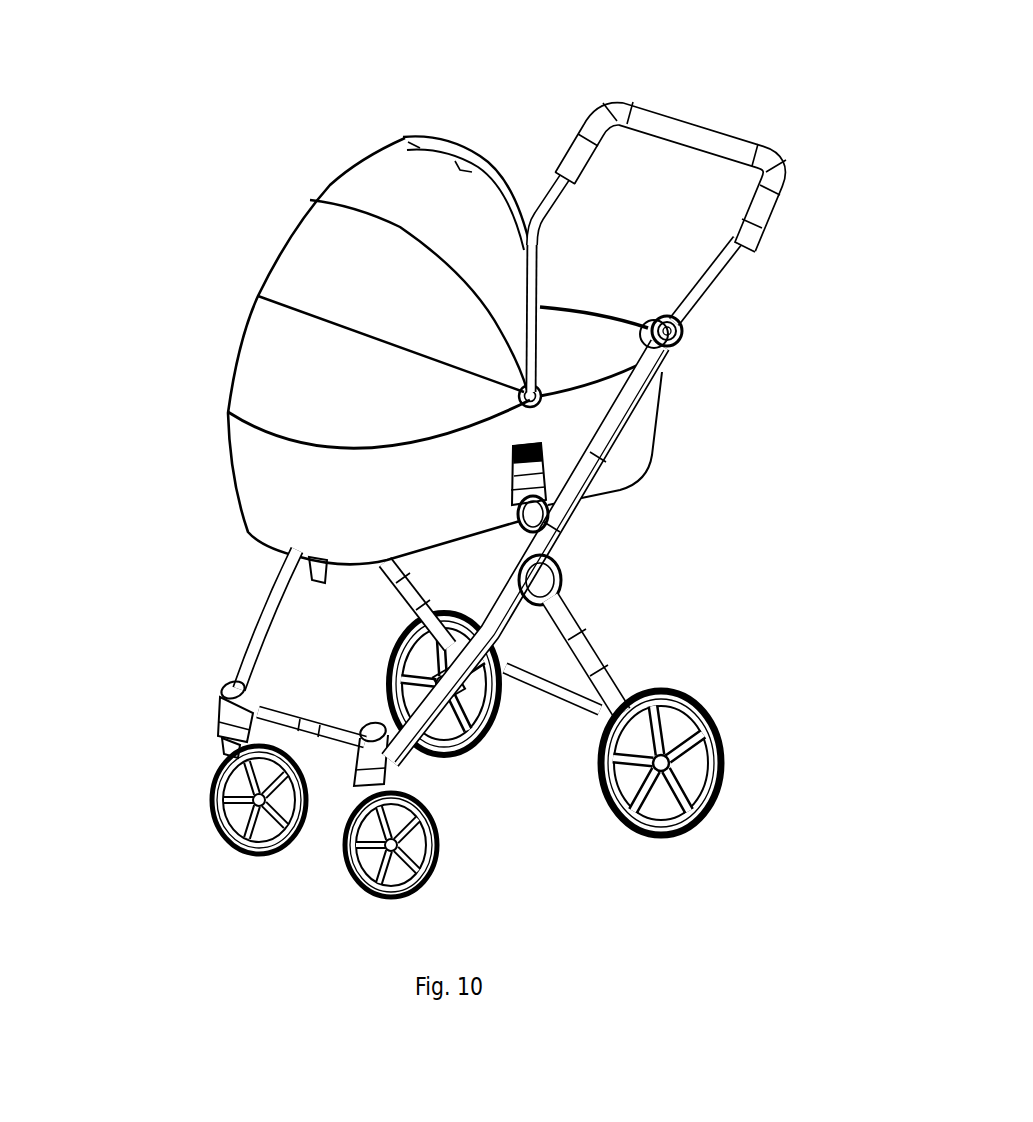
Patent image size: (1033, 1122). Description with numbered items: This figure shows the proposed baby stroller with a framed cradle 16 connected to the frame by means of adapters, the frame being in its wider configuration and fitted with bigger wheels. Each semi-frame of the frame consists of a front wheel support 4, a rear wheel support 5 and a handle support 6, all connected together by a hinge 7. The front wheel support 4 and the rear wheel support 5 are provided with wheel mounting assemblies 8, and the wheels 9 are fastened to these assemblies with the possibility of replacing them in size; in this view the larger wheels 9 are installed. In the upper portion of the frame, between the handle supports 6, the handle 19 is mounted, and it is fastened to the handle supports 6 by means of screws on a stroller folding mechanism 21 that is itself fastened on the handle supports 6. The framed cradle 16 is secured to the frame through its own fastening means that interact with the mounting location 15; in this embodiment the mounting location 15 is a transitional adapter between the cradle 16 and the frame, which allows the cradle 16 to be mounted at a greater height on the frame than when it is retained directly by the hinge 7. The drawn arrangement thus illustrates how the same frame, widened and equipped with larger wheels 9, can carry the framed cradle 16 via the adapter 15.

The framed seat or cradle 16 is at (257, 332).
The handle 19 is at (688, 125).
The stroller folding mechanism 21 is at (697, 322).
The handle support 6 is at (655, 395).
The mounting location (transitional adapter) 15 is at (530, 517).
The hinge 7 is at (537, 583).
The rear wheel support 5 is at (613, 690).
The wheel 9 is at (720, 777).
The front wheel support 4 is at (250, 637).
The wheel mounting assembly 8 is at (218, 717).